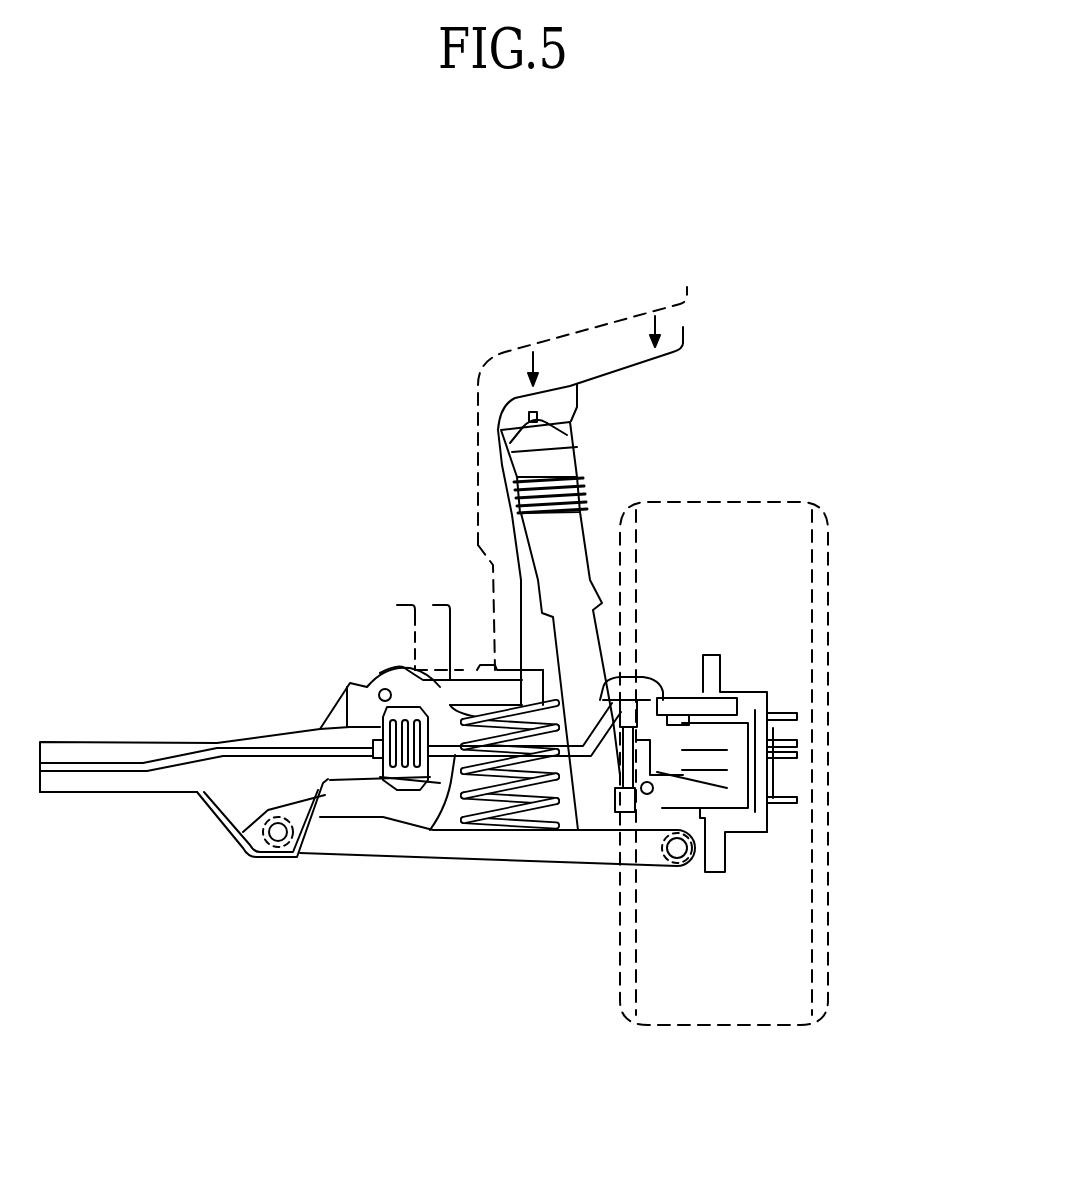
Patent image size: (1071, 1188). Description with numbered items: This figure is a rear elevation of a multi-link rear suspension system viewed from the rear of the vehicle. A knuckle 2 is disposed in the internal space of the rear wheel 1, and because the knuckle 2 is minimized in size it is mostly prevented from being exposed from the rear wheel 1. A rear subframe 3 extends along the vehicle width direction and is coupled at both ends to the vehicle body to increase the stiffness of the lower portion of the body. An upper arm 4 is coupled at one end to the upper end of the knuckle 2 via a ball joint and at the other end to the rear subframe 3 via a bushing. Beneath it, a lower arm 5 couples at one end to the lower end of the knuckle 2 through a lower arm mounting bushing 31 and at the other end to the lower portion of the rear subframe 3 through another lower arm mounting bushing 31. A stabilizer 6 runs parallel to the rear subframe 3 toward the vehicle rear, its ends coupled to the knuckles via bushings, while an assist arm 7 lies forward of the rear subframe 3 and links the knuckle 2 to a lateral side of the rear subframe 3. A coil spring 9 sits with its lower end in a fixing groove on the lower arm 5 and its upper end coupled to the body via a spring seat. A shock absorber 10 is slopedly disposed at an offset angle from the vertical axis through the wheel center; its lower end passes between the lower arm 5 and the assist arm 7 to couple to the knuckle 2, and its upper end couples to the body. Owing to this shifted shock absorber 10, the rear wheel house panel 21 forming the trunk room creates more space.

The rear wheel 1 is at (818, 743).
The knuckle 2 is at (765, 698).
The rear subframe 3 is at (97, 740).
The upper arm 4 is at (556, 726).
The lower arm 5 is at (373, 842).
The stabilizer 6 is at (130, 768).
The assist arm 7 is at (450, 797).
The coil spring 9 is at (493, 812).
The shock absorber 10 is at (585, 490).
The rear wheel house panel 21 is at (665, 354).
The lower arm mounting bushing 31 is at (253, 867).